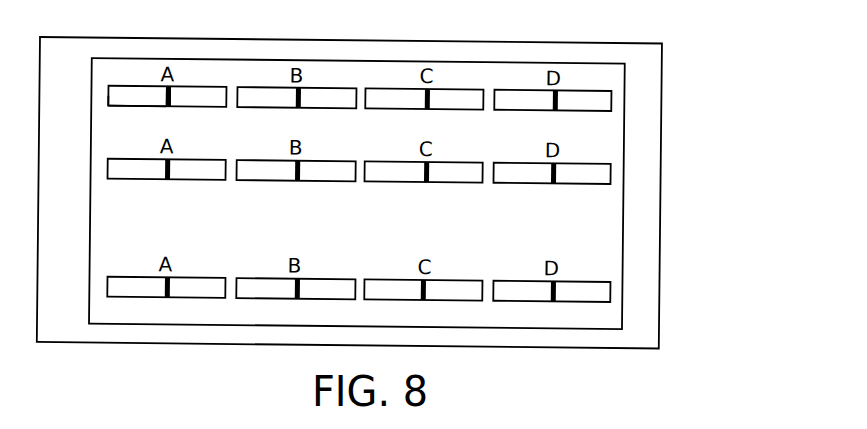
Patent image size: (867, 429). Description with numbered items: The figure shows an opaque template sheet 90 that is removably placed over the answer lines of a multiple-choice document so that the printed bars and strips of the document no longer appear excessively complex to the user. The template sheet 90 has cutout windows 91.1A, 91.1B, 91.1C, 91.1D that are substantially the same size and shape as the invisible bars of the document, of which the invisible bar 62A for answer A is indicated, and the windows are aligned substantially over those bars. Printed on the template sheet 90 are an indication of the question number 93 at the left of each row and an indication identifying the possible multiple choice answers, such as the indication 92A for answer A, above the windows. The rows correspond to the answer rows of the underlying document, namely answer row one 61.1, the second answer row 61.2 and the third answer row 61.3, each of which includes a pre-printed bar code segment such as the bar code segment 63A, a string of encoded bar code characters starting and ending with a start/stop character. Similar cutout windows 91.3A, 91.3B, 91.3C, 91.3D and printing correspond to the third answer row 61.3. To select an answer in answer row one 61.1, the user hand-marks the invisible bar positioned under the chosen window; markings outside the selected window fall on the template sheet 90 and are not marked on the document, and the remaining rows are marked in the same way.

The template sheet 90 is at (131, 323).
The indication of the question number 93 is at (61, 107).
The answer row one 61.1 is at (395, 86).
The answer row 61.2 is at (619, 166).
The answer row 61.3 is at (398, 331).
The cutout window 91.1A is at (169, 105).
The cutout window 91.1B is at (299, 105).
The cutout window 91.1C is at (428, 105).
The cutout window 91.1D is at (556, 105).
The cutout window 91.3A is at (170, 296).
The cutout window 91.3B is at (300, 296).
The cutout window 91.3C is at (426, 296).
The cutout window 91.3D is at (556, 296).
The indication identifying the possible multiple choice answer 92A is at (162, 73).
The invisible bar 62A is at (175, 80).
The bar code segment 63A is at (146, 113).